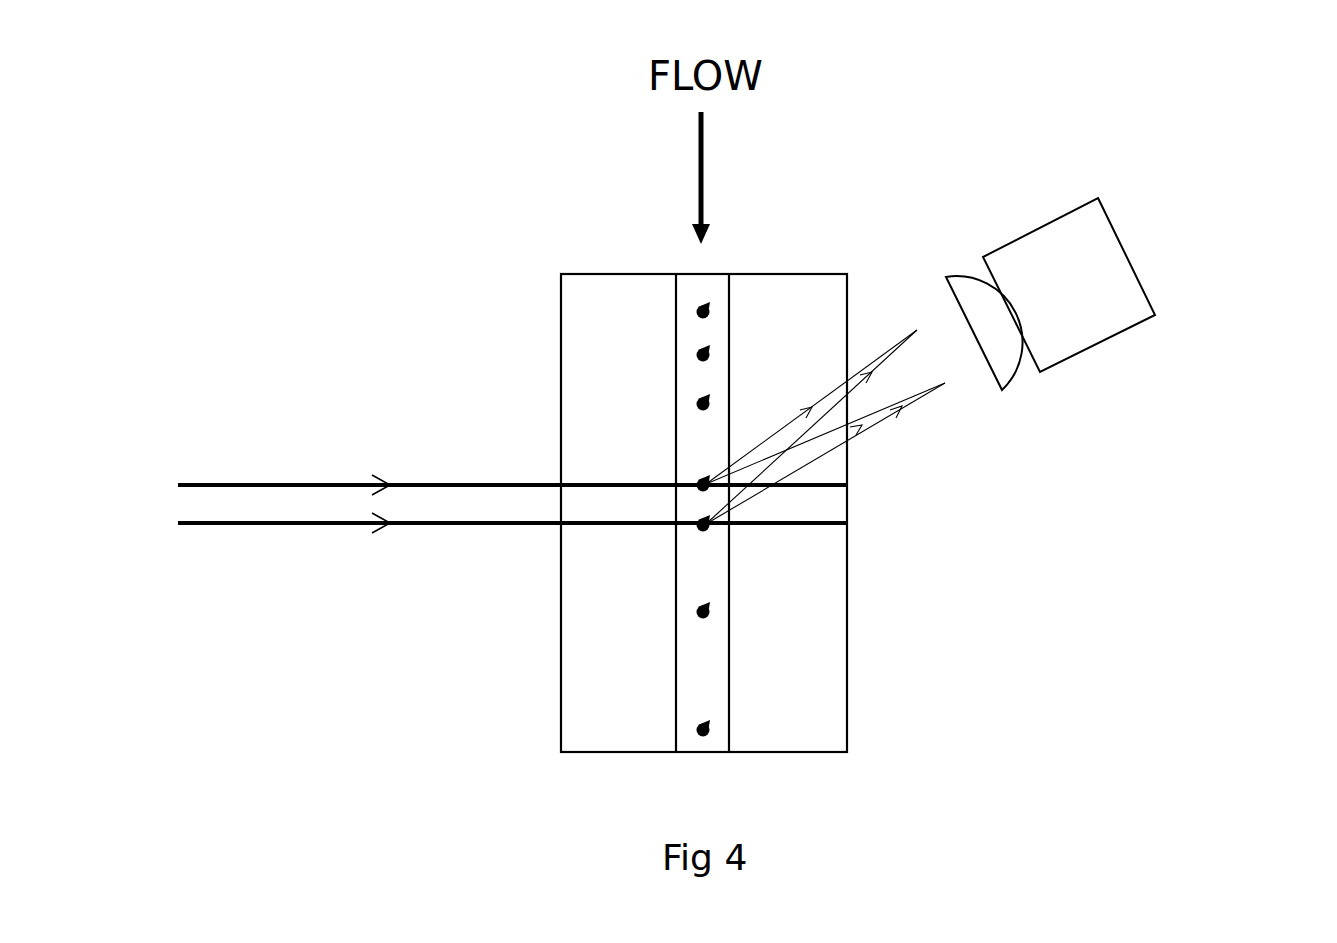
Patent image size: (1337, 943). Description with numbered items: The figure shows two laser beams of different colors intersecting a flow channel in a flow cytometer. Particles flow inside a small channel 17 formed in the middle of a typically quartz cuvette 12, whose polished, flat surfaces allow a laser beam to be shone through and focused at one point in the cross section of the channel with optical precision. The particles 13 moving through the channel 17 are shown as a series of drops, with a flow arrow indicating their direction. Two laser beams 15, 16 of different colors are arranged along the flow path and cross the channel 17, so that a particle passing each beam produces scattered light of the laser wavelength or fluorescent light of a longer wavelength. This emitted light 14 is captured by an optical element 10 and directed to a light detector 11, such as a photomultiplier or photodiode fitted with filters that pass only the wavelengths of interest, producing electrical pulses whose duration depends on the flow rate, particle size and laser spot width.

The optical element 10 is at (1002, 390).
The light detector 11 is at (1147, 291).
The quartz cuvette 12 is at (847, 590).
The particles / droplets 13 is at (706, 310).
The emitted light 14 is at (878, 413).
The laser beam 15 is at (278, 485).
The laser beam 16 is at (278, 523).
The channel 17 is at (729, 686).